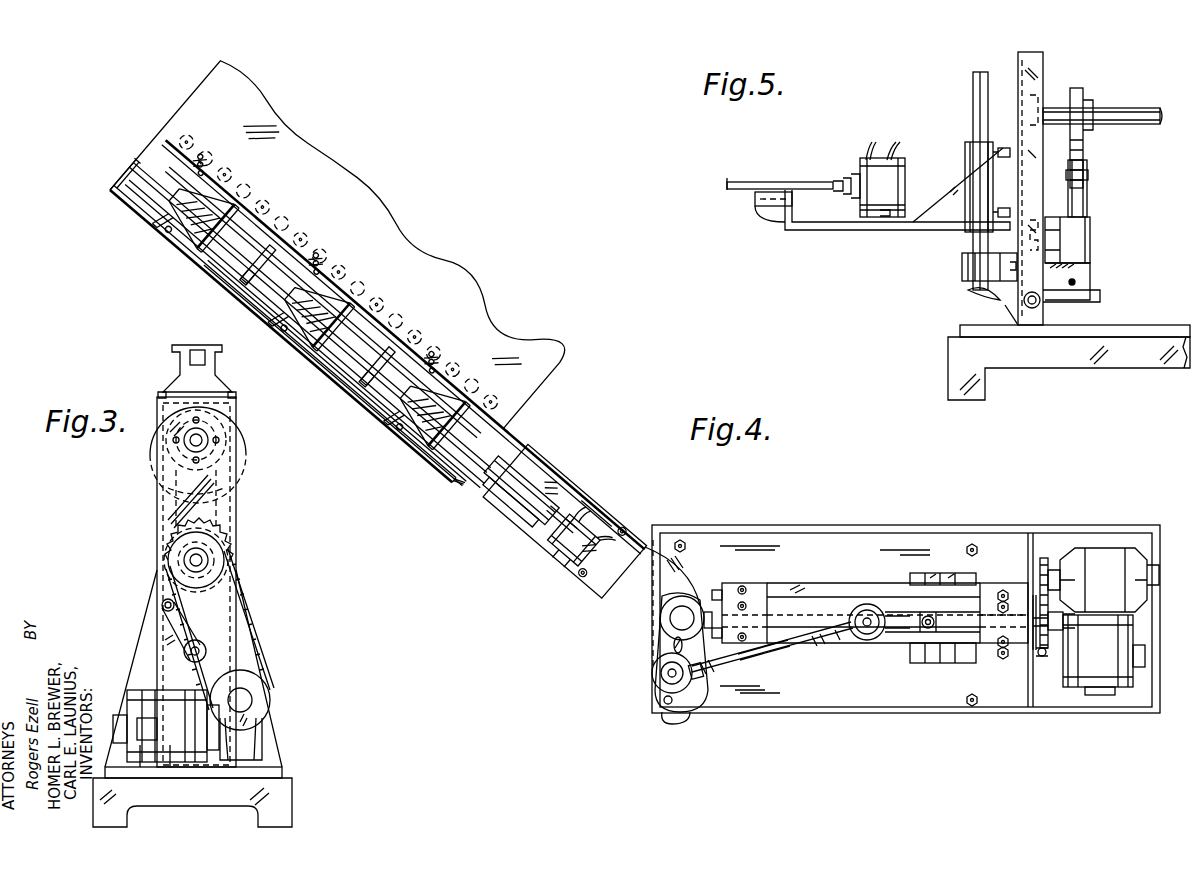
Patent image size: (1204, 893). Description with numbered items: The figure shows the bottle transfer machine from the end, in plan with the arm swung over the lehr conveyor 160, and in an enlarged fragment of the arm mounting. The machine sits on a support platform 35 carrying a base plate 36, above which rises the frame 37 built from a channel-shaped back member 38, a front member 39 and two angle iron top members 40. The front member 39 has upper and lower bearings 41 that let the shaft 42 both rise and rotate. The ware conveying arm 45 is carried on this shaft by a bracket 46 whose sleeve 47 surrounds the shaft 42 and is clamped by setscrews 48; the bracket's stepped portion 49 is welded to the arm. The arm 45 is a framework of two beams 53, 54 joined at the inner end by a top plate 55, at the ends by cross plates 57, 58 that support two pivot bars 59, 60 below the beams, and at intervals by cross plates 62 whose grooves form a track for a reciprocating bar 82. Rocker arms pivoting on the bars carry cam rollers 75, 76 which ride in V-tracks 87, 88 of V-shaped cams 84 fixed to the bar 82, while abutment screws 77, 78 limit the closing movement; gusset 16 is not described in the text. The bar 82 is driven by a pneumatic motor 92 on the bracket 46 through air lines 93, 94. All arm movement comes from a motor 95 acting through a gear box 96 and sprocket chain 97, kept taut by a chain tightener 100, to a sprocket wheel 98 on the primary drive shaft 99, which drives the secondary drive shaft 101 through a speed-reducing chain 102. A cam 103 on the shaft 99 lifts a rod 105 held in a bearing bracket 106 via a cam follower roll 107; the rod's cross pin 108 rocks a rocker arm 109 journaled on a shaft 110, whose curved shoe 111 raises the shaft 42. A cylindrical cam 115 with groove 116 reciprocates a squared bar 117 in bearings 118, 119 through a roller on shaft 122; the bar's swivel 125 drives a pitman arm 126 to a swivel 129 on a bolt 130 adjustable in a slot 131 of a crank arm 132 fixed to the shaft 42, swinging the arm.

In FIG. 4, the truss gusset plate 16 is at (172, 228).
In FIG. 3, the support platform 35 is at (300, 803).
In FIG. 4, the support platform 35 is at (905, 718).
In FIG. 5, the support platform 35 is at (947, 365).
In FIG. 3, the base plate 36 is at (280, 773).
In FIG. 4, the base plate 36 is at (910, 545).
In FIG. 5, the base plate 36 is at (1130, 337).
In FIG. 3, the support or frame 37 is at (156, 536).
In FIG. 4, the support or frame 37 is at (993, 583).
In FIG. 5, the support or frame 37 is at (1045, 78).
In FIG. 3, the channel-shaped back member 38 is at (233, 507).
In FIG. 5, the front member 39 is at (1015, 295).
In FIG. 4, the angle iron top members 40 is at (835, 585).
In FIG. 4, the bearings 41 is at (708, 612).
In FIG. 5, the bearings 41 is at (962, 278).
In FIG. 4, the shaft 42 is at (683, 620).
In FIG. 5, the shaft 42 is at (978, 88).
In FIG. 4, the ware conveying and supporting arm 45 is at (478, 487).
In FIG. 4, the bracket 46 is at (628, 608).
In FIG. 5, the bracket 46 is at (880, 230).
In FIG. 5, the sleeve 47 is at (968, 160).
In FIG. 5, the setscrews 48 is at (1010, 212).
In FIG. 4, the stepped portion 49 is at (527, 522).
In FIG. 5, the stepped portion 49 is at (778, 206).
In FIG. 4, the beam 53 is at (165, 148).
In FIG. 4, the beam 54 is at (132, 205).
In FIG. 4, the top plate 55 is at (512, 510).
In FIG. 5, the top plate 55 is at (745, 195).
In FIG. 4, the cross plate 57 is at (150, 180).
In FIG. 4, the cross plate 58 is at (457, 477).
In FIG. 4, the pivot bar 59 is at (392, 412).
In FIG. 4, the pivot bar 60 is at (345, 373).
In FIG. 4, the cross plates 62 is at (273, 247).
In FIG. 4, the cam roller 75 is at (208, 180).
In FIG. 4, the cam roller 76 is at (285, 310).
In FIG. 4, the abutment screw 77 is at (226, 183).
In FIG. 4, the abutment screw 78 is at (172, 252).
In FIG. 4, the bar 82 is at (232, 278).
In FIG. 5, the bar 82 is at (760, 182).
In FIG. 4, the V-shaped cams 84 is at (180, 170).
In FIG. 4, the V-track 87 is at (245, 196).
In FIG. 4, the V-track 88 is at (206, 262).
In FIG. 4, the pneumatic motor 92 is at (608, 520).
In FIG. 5, the pneumatic motor 92 is at (880, 158).
In FIG. 4, the air line 93 is at (598, 588).
In FIG. 5, the air line 93 is at (897, 142).
In FIG. 4, the air line 94 is at (580, 567).
In FIG. 5, the air line 94 is at (870, 142).
In FIG. 3, the motor 95 is at (148, 690).
In FIG. 4, the motor 95 is at (1090, 687).
In FIG. 3, the gear box 96 is at (262, 698).
In FIG. 4, the gear box 96 is at (1105, 550).
In FIG. 3, the sprocket chain 97 is at (248, 628).
In FIG. 4, the sprocket chain 97 is at (1048, 562).
In FIG. 3, the sprocket wheel 98 is at (218, 580).
In FIG. 4, the sprocket wheel 98 is at (1063, 630).
In FIG. 3, the primary drive shaft 99 is at (205, 557).
In FIG. 4, the primary drive shaft 99 is at (1070, 620).
In FIG. 5, the primary drive shaft 99 is at (1142, 124).
In FIG. 3, the sprocket chain tightener 100 is at (180, 620).
In FIG. 4, the sprocket chain tightener 100 is at (1043, 660).
In FIG. 3, the secondary drive shaft 101 is at (202, 438).
In FIG. 3, the speed-reducing sprocket chain 102 is at (172, 492).
In FIG. 5, the cam 103 is at (1085, 92).
In FIG. 5, the rod 105 is at (1090, 200).
In FIG. 5, the bearing bracket 106 is at (1090, 238).
In FIG. 5, the cam follower roll 107 is at (1088, 162).
In FIG. 5, the cross pin 108 is at (1082, 282).
In FIG. 5, the rocker arm 109 is at (1058, 302).
In FIG. 5, the shaft 110 is at (1028, 310).
In FIG. 5, the curved shoe 111 is at (972, 292).
In FIG. 3, the cylindrical cam 115 is at (246, 450).
In FIG. 4, the cylindrical cam 115 is at (925, 573).
In FIG. 4, the cam groove 116 is at (945, 663).
In FIG. 3, the squared bar 117 is at (190, 361).
In FIG. 4, the squared bar 117 is at (810, 620).
In FIG. 3, the bearing 118 is at (208, 362).
In FIG. 4, the bearing 118 is at (1028, 660).
In FIG. 4, the bearing 119 is at (745, 572).
In FIG. 4, the shaft 122 is at (926, 632).
In FIG. 4, the clevice-like swivel 125 is at (868, 640).
In FIG. 4, the pitman arm 126 is at (780, 665).
In FIG. 4, the swivel 129 is at (698, 690).
In FIG. 4, the bolt 130 is at (660, 678).
In FIG. 4, the slot 131 is at (675, 652).
In FIG. 4, the crank arm 132 is at (672, 724).
In FIG. 4, the lehr conveyor 160 is at (517, 303).